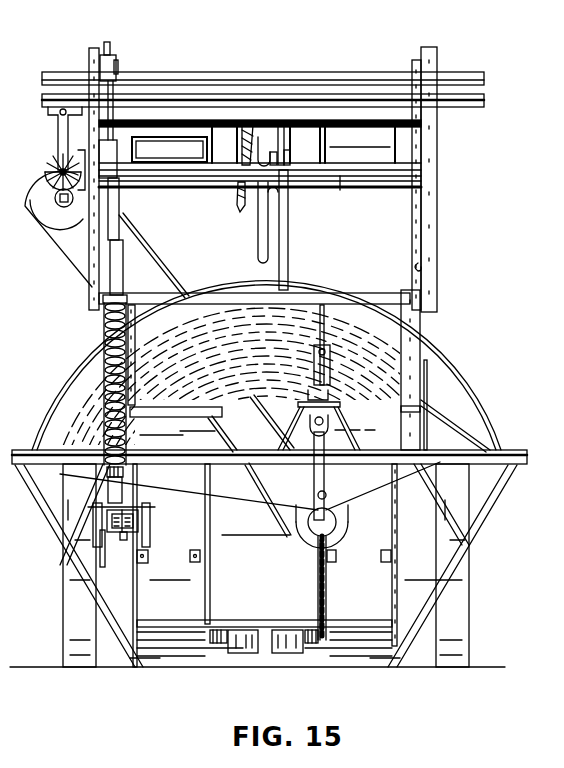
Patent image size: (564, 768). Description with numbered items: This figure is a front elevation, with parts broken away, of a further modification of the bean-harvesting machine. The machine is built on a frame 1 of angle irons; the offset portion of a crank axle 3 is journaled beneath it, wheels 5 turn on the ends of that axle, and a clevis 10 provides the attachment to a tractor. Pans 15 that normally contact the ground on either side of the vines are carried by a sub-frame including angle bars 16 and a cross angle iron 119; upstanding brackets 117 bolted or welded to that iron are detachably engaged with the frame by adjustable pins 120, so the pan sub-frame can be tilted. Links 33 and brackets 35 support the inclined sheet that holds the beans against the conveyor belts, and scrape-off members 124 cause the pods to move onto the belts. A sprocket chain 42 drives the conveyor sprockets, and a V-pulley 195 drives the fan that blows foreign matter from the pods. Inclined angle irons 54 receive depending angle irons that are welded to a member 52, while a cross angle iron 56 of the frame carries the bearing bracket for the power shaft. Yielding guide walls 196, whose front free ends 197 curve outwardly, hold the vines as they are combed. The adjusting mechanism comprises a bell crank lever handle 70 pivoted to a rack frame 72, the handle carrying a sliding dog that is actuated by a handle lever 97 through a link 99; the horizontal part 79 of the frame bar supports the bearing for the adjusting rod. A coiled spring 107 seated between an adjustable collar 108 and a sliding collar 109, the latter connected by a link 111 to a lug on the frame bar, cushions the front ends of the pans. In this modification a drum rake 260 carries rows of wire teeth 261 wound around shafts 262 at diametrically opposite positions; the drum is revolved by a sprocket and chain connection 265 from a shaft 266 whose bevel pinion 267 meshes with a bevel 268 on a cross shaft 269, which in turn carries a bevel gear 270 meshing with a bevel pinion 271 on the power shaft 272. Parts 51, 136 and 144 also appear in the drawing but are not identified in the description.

The frame 1 is at (420, 331).
The crank axle 3 is at (230, 514).
The wheels 5 is at (70, 597).
The clevis 10 is at (138, 523).
The pans 15 is at (152, 660).
The angle bars 16 is at (482, 520).
The links 33 is at (186, 589).
The brackets 35 is at (190, 560).
The sprocket chain 42 is at (266, 140).
The vertical rod 51 is at (288, 195).
The supporting member 52 is at (340, 190).
The angle irons 54 is at (421, 146).
The cross angle iron 56 is at (372, 291).
The bell crank lever handle 70 is at (108, 42).
The rack frame 72 is at (108, 282).
The horizontal part of frame bar 79 is at (421, 263).
The handle lever 97 is at (116, 58).
The link 99 is at (113, 100).
The coiled spring 107 is at (105, 329).
The adjustable collar 108 is at (123, 478).
The collar 109 is at (102, 302).
The link 111 is at (104, 342).
The upstanding brackets 117 is at (424, 408).
The cross angle iron 119 is at (540, 458).
The adjustable pins 120 is at (427, 364).
The scrape-off members 124 is at (314, 643).
The lower top rail 136 is at (486, 101).
The upper top rail 144 is at (486, 78).
The V-pulley 195 is at (284, 130).
The guide walls 196 is at (243, 653).
The front free ends 197 is at (282, 653).
The drum rake 260 is at (317, 553).
The teeth 261 is at (324, 340).
The shafts 262 is at (330, 358).
The sprocket and chain connection 265 is at (56, 248).
The shaft 266 is at (58, 132).
The bevel pinion 267 is at (46, 160).
The bevel gear 268 is at (76, 214).
The cross shaft 269 is at (198, 156).
The bevel gear 270 is at (243, 210).
The bevel pinion 271 is at (248, 128).
The power shaft 272 is at (256, 250).